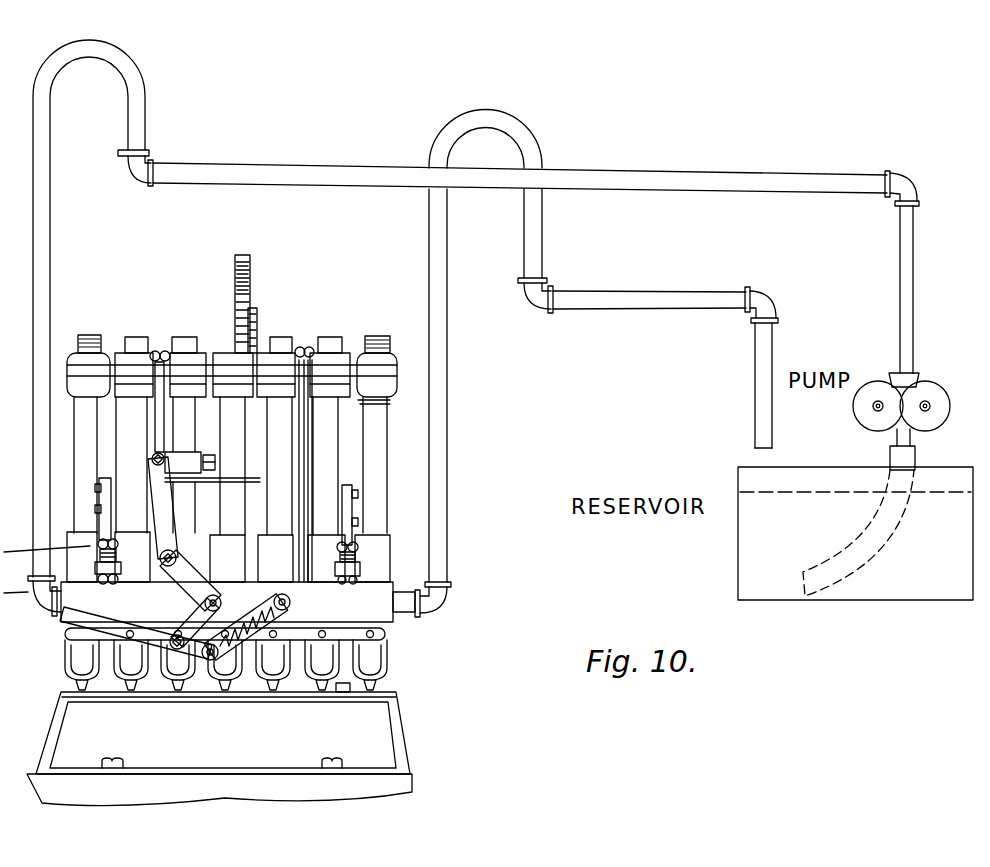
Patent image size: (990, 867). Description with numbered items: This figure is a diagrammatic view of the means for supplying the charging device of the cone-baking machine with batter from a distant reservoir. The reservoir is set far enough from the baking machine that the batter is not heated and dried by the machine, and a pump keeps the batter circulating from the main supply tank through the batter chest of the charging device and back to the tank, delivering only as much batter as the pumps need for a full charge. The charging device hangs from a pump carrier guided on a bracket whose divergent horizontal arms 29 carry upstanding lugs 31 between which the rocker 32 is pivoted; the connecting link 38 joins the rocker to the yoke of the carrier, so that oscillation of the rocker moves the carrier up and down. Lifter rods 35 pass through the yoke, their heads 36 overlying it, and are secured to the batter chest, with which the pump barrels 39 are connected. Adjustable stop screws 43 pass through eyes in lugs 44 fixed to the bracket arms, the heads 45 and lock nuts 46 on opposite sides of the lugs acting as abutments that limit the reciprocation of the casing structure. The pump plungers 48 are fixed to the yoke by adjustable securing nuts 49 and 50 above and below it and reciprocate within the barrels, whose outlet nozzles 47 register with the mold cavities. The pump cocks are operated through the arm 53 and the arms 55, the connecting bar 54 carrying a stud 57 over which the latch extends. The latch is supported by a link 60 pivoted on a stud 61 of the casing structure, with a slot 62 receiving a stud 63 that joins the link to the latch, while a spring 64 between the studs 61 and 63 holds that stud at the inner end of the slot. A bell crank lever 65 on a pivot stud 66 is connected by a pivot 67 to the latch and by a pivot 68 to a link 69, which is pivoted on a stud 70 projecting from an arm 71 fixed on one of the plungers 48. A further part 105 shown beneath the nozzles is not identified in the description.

The divergent horizontal arms 29 is at (353, 500).
The upstanding lugs 31 is at (257, 320).
The rocker 32 is at (251, 282).
The lifter rods 35 is at (161, 400).
The heads 36 is at (155, 350).
The connecting link 38 is at (234, 293).
The pump barrels 39 is at (432, 613).
The adjustable stop screws 43 is at (360, 562).
The lugs 44 is at (106, 585).
The heads 45 is at (357, 548).
The lock nuts 46 is at (352, 588).
The outlet nozzles 47 is at (370, 690).
The pump plungers 48 is at (77, 452).
The adjustable securing nuts 49 is at (383, 351).
The adjustable securing nuts 50 is at (386, 401).
The arm 53 is at (128, 665).
The connecting bar 54 is at (300, 690).
The arms 55 is at (323, 642).
The stud 57 is at (70, 633).
The link 60 is at (252, 598).
The stud 61 is at (291, 603).
The slot 62 is at (198, 662).
The stud 63 is at (225, 690).
The spring 64 is at (270, 690).
The bell crank lever 65 is at (192, 583).
The pivot stud 66 is at (184, 638).
The pivot 67 is at (170, 650).
The pivot 68 is at (160, 566).
The link 69 is at (130, 503).
The stud 70 is at (152, 460).
The arm 71 is at (192, 452).
The tray 105 is at (62, 694).